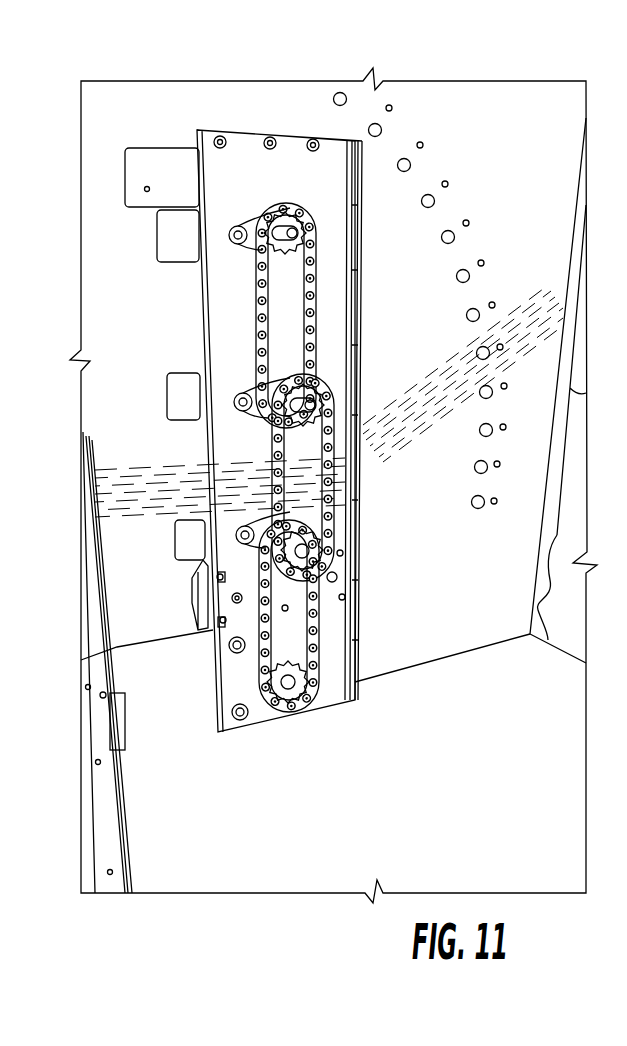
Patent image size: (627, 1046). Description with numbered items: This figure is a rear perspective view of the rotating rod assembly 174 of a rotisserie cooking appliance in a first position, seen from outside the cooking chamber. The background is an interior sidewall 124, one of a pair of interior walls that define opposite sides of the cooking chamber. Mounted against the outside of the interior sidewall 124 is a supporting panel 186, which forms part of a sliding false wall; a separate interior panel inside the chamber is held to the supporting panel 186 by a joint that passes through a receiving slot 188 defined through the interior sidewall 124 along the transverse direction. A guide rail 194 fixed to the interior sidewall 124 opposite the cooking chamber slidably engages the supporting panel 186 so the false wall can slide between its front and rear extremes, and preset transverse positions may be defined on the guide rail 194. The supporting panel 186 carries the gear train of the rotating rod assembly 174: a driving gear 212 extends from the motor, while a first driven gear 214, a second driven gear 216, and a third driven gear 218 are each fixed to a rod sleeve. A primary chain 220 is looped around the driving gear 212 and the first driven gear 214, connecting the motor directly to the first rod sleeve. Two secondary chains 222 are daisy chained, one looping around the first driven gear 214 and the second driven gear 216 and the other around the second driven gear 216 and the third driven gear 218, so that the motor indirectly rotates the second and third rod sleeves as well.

The interior sidewall 124 is at (512, 115).
The rotating rod assembly 174 is at (346, 754).
The supporting panel 186 is at (360, 160).
The receiving slot 188 is at (183, 375).
The guide rail 194 is at (137, 178).
The driving gear 212 is at (288, 697).
The first driven gear 214 is at (330, 540).
The second driven gear 216 is at (330, 386).
The third driven gear 218 is at (282, 222).
The primary chain 220 is at (330, 612).
The secondary chain 222 is at (330, 316).